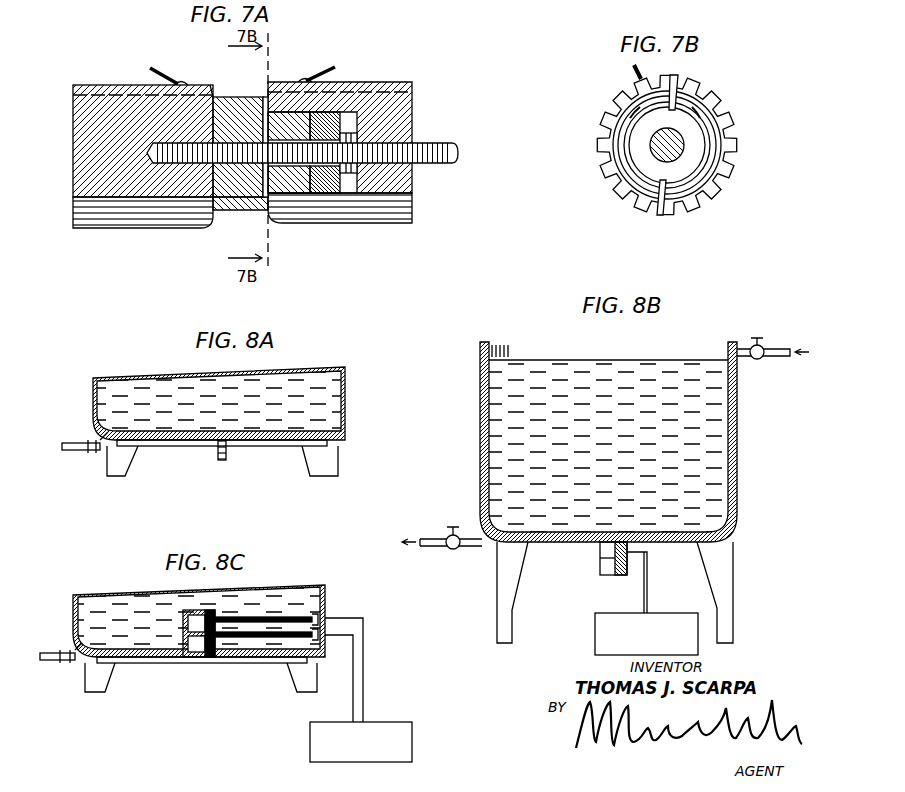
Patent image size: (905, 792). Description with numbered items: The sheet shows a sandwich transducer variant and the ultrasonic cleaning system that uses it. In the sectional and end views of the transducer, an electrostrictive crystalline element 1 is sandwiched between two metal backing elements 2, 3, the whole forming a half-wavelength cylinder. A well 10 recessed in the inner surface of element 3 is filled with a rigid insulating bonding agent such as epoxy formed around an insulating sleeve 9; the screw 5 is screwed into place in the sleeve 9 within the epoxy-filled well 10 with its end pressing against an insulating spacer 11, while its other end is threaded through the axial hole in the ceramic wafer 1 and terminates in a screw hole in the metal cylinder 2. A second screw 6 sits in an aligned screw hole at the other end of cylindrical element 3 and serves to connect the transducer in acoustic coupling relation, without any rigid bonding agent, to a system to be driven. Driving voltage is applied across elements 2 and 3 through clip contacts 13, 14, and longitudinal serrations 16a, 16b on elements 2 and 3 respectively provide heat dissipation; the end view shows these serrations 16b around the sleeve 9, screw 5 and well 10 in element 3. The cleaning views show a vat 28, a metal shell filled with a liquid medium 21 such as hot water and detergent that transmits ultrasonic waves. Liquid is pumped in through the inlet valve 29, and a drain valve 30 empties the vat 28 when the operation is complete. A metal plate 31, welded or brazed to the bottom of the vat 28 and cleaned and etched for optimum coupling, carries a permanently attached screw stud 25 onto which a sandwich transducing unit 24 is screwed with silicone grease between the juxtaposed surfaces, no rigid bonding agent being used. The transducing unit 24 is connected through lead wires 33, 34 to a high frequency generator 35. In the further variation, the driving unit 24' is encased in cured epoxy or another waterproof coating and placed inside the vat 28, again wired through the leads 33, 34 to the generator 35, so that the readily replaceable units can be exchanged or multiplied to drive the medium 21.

In FIG. 7A, the electrostrictive crystalline element 1 is at (240, 212).
In FIG. 7A, the metal backing element 2 is at (73, 152).
In FIG. 7A, the metal backing element 3 is at (405, 172).
In FIG. 7B, the metal backing element 3 is at (720, 167).
In FIG. 7A, the screw 5 is at (170, 166).
In FIG. 7B, the screw 5 is at (684, 145).
In FIG. 7A, the screw 6 is at (458, 149).
In FIG. 7A, the insulating sleeve 9 is at (299, 180).
In FIG. 7B, the insulating sleeve 9 is at (686, 134).
In FIG. 7A, the well 10 is at (324, 110).
In FIG. 7B, the well 10 is at (688, 168).
In FIG. 7A, the insulating spacer 11 is at (350, 180).
In FIG. 7A, the clip contact 13 is at (160, 74).
In FIG. 7A, the clip contact 14 is at (322, 68).
In FIG. 7B, the clip contact 14 is at (631, 72).
In FIG. 7A, the longitudinal serrations 16a is at (92, 86).
In FIG. 7A, the longitudinal serrations 16b is at (388, 85).
In FIG. 7B, the longitudinal serrations 16b is at (719, 110).
In FIG. 8A, the medium 21 is at (325, 388).
In FIG. 8B, the medium 21 is at (717, 387).
In FIG. 8C, the medium 21 is at (308, 593).
In FIG. 8B, the sandwich transducing unit 24 is at (597, 571).
In FIG. 8C, the driving unit 24' is at (250, 610).
In FIG. 8A, the screw stud 25 is at (228, 452).
In FIG. 8A, the vat 28 is at (343, 408).
In FIG. 8B, the vat 28 is at (733, 405).
In FIG. 8C, the vat 28 is at (72, 605).
In FIG. 8B, the inlet valve 29 is at (772, 346).
In FIG. 8A, the valve 30 is at (75, 440).
In FIG. 8B, the valve 30 is at (472, 548).
In FIG. 8C, the valve 30 is at (58, 650).
In FIG. 8A, the metal plate 31 is at (170, 448).
In FIG. 8B, the metal plate 31 is at (552, 546).
In FIG. 8C, the metal plate 31 is at (148, 663).
In FIG. 8B, the lead wire 33 is at (650, 578).
In FIG. 8C, the lead wire 33 is at (345, 618).
In FIG. 8B, the lead wire 34 is at (644, 596).
In FIG. 8C, the lead wire 34 is at (340, 642).
In FIG. 8B, the high frequency generator 35 is at (676, 613).
In FIG. 8C, the high frequency generator 35 is at (380, 722).